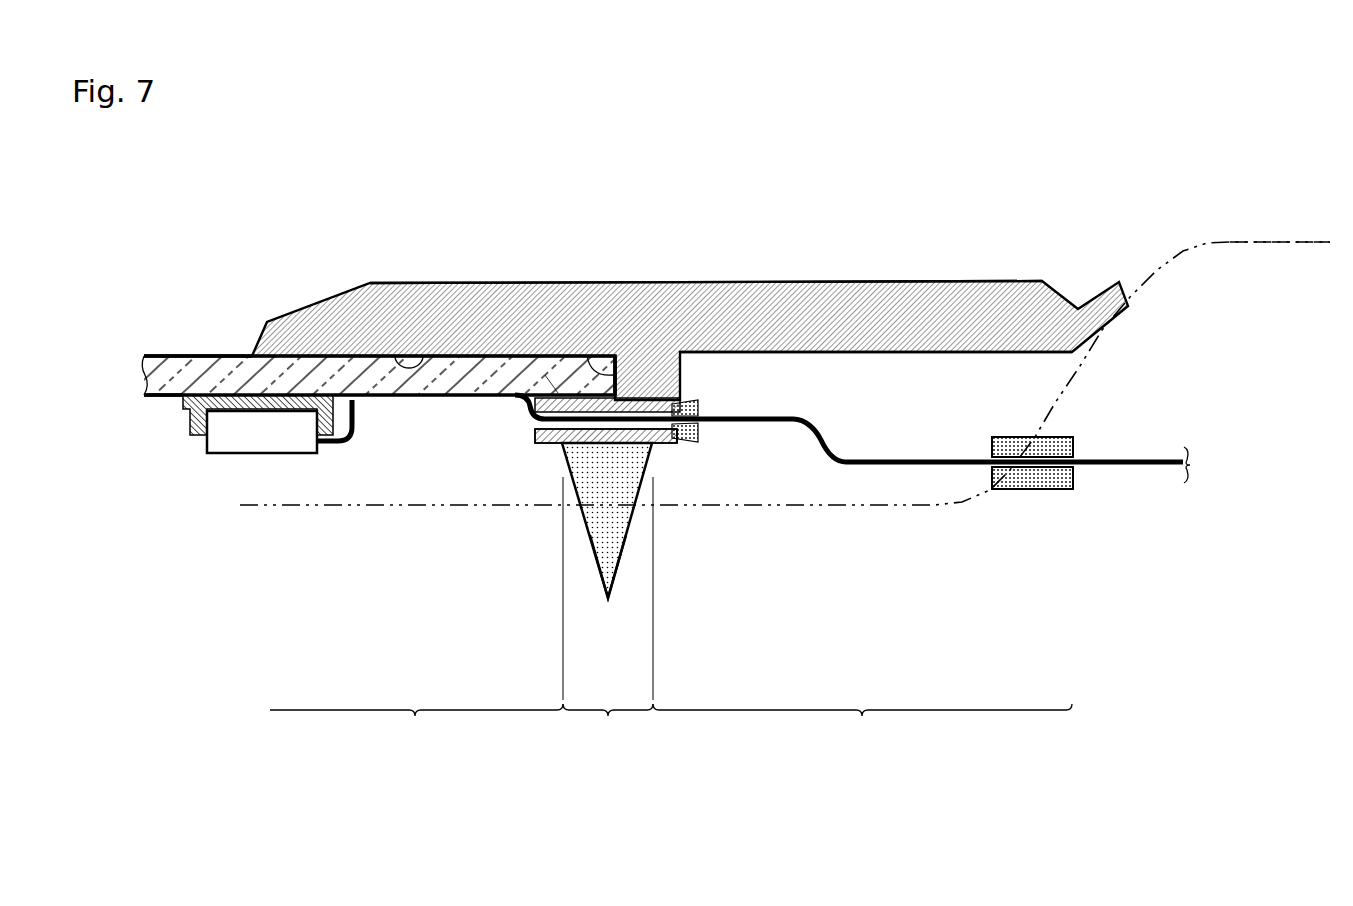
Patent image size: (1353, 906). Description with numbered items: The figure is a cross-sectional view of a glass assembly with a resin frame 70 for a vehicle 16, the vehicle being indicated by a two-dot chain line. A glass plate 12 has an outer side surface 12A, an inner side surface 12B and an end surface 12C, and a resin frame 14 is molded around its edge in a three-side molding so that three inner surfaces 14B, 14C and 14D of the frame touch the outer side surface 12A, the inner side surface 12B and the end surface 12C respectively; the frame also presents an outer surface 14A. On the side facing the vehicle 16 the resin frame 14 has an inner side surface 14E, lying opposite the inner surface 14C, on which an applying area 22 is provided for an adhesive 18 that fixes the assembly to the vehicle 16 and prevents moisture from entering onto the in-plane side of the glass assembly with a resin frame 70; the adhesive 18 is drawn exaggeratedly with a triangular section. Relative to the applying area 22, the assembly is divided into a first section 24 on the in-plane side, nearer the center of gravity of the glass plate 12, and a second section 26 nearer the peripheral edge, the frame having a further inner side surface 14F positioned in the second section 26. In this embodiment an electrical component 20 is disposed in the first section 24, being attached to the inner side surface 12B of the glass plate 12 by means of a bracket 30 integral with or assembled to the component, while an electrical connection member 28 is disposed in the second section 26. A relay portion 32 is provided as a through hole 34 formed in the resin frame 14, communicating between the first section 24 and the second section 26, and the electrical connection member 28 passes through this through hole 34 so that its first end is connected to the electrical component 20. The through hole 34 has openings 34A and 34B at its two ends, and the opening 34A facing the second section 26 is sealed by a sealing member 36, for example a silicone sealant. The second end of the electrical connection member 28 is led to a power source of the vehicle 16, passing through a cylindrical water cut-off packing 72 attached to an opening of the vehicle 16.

The glass plate 12 is at (169, 353).
The outer side surface 12A is at (211, 356).
The inner side surface 12B is at (163, 396).
The end surface 12C is at (627, 363).
The resin frame 14 is at (933, 278).
The outer surface of resin frame 14A is at (780, 281).
The inner surface 14B is at (397, 355).
The inner surface 14C is at (555, 393).
The inner surface 14D is at (587, 355).
The inner side surface 14E is at (668, 445).
The inner side surface 14F is at (848, 353).
The vehicle 16 is at (1262, 242).
The adhesive 18 is at (605, 548).
The electrical component 20 is at (260, 450).
The applying area 22 is at (608, 611).
The first section 24 is at (416, 725).
The second section 26 is at (862, 725).
The electrical connection member 28 is at (914, 459).
The bracket 30 is at (202, 438).
The relay portion 32 is at (600, 441).
The through hole 34 is at (668, 408).
The opening 34A is at (698, 432).
The opening 34B is at (535, 431).
The sealing member 36 is at (698, 402).
The glass assembly with a resin frame 70 is at (860, 177).
The cylindrical water cut-off packing 72 is at (1032, 490).